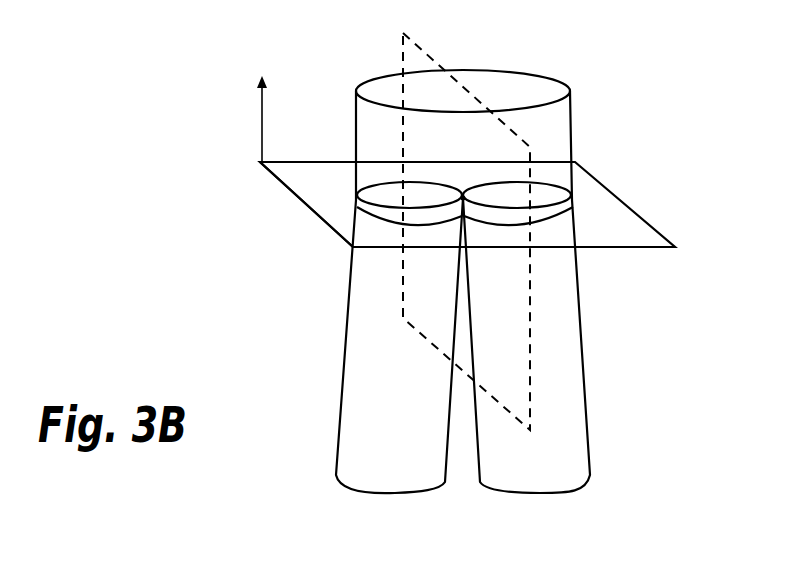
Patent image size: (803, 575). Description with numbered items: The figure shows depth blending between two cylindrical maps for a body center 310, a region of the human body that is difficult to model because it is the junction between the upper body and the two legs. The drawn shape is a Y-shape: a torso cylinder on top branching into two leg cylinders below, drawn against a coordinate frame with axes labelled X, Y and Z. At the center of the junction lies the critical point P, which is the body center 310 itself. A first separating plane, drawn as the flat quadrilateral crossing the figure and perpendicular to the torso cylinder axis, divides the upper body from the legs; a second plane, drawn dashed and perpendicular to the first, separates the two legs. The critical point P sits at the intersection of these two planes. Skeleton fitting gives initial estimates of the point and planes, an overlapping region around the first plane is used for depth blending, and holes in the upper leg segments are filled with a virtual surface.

The body center 310 is at (325, 37).
The critical point P is at (463, 187).
The X axis X is at (306, 204).
The Y axis Y is at (417, 148).
The Z axis Z is at (254, 119).